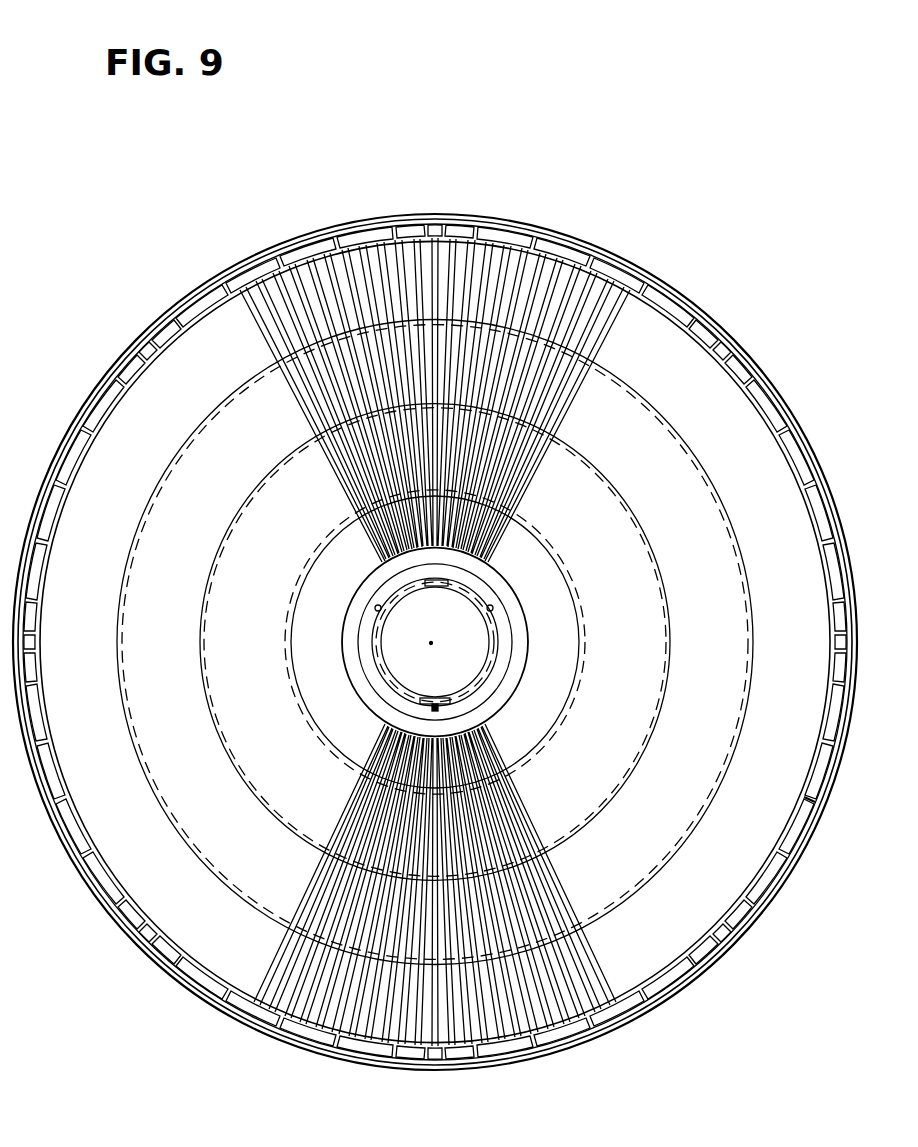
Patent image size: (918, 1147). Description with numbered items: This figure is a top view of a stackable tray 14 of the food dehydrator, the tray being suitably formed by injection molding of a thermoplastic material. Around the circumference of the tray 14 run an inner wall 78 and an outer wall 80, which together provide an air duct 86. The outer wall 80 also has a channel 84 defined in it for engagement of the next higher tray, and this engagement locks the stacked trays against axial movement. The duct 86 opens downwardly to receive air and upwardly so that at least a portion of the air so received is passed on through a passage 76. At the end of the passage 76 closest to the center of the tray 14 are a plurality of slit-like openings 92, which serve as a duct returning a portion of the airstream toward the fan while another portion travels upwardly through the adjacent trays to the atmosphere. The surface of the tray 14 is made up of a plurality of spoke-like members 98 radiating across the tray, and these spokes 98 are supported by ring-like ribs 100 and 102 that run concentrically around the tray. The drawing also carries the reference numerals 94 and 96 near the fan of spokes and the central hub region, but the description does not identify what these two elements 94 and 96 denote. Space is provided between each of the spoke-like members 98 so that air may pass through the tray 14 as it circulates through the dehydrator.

The tray 14 is at (502, 1063).
The passage 76 is at (823, 768).
The inner wall 78 is at (822, 808).
The outer wall 80 is at (815, 793).
The channel 84 is at (839, 714).
The air duct 86 is at (124, 358).
The slit-like openings 92 is at (492, 641).
The radial ribs 94 is at (522, 489).
The hub ring 96 is at (493, 575).
The spoke-like members 98 is at (389, 541).
The ring-like rib 100 is at (286, 661).
The ring-like rib 102 is at (201, 661).